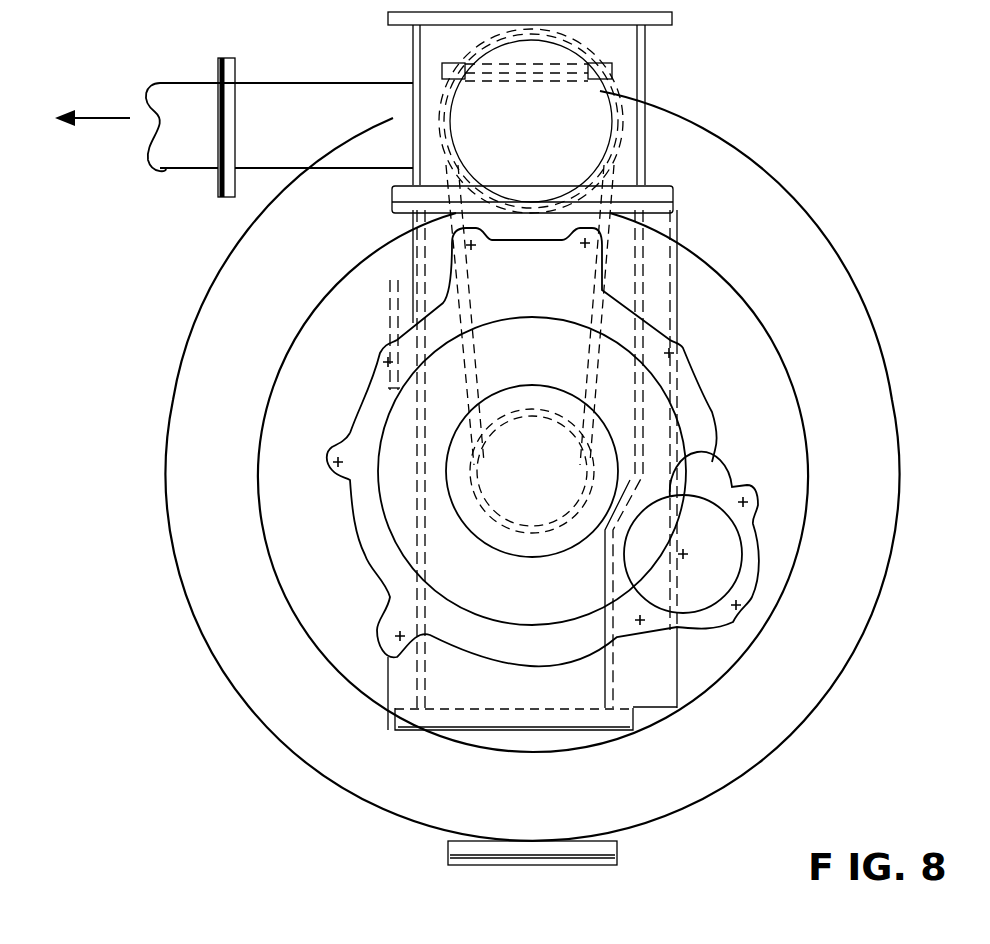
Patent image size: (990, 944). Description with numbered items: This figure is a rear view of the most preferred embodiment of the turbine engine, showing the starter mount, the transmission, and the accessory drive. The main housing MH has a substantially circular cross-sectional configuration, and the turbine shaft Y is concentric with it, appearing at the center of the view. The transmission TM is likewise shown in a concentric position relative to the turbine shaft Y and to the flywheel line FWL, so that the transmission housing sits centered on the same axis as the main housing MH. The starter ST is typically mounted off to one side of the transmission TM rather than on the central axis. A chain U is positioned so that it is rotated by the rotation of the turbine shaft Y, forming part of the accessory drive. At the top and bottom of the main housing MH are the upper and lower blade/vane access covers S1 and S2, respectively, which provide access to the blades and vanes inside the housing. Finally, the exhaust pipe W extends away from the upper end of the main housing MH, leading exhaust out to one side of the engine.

The main housing MH is at (272, 680).
The flywheel line FWL is at (385, 413).
The transmission TM is at (690, 393).
The starter ST is at (715, 553).
The turbine shaft Y is at (535, 408).
The upper blade/vane access cover S1 is at (640, 66).
The chain U is at (612, 165).
The exhaust pipe W is at (197, 138).
The lower blade/vane access cover S2 is at (490, 858).